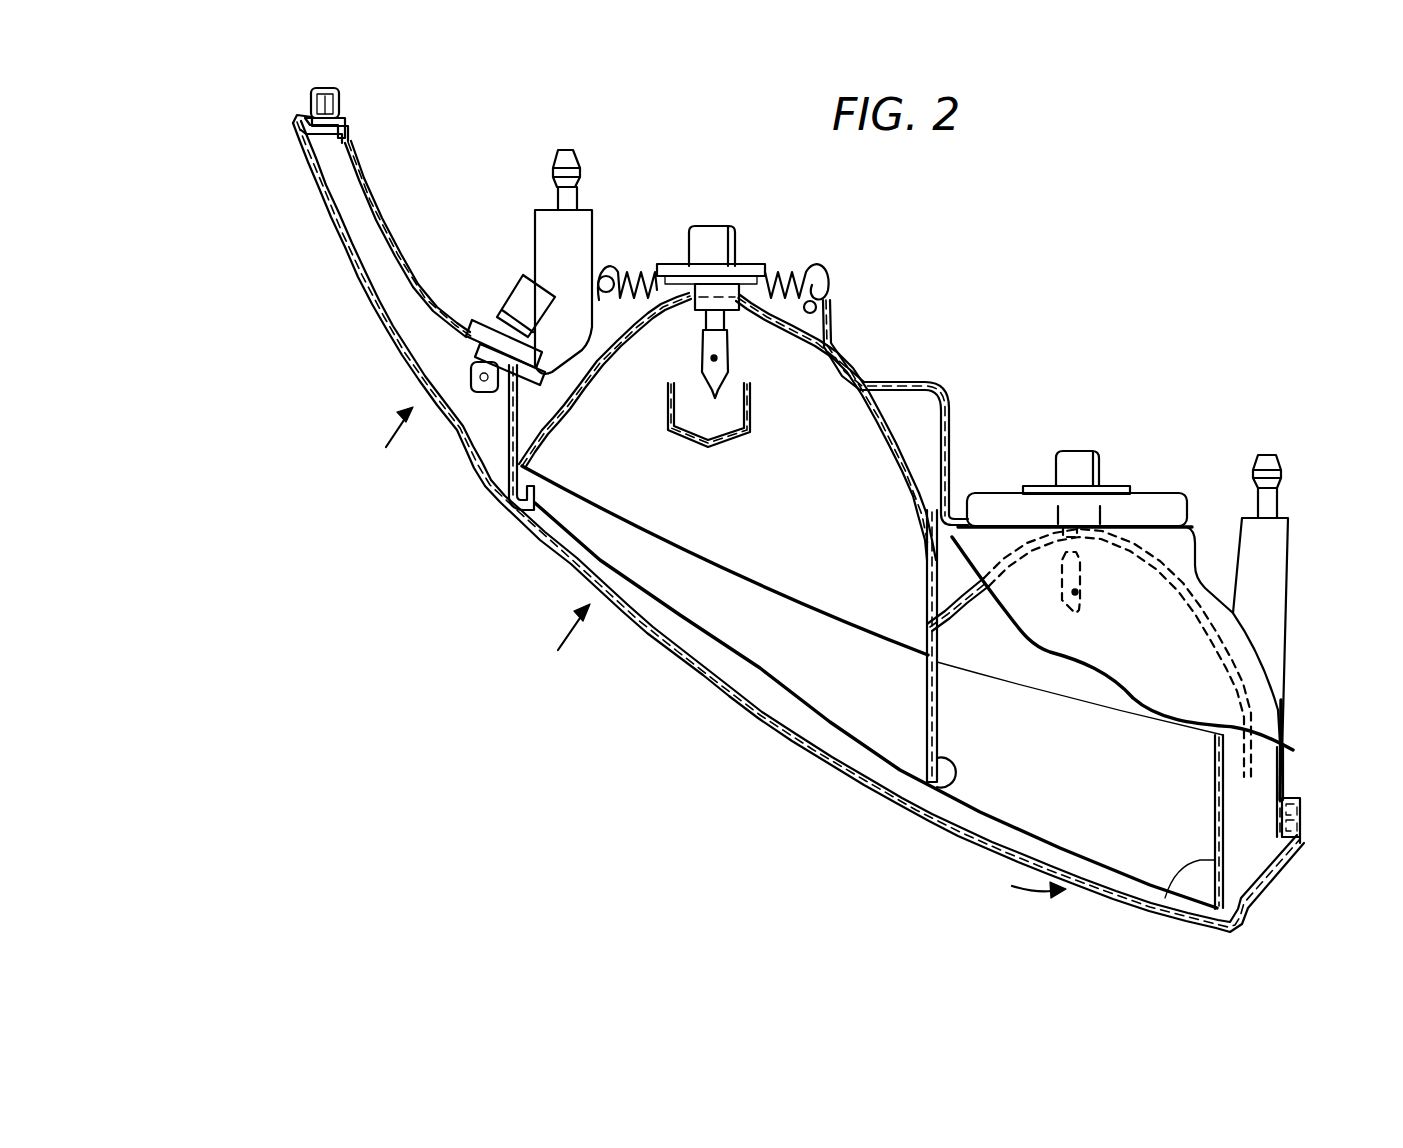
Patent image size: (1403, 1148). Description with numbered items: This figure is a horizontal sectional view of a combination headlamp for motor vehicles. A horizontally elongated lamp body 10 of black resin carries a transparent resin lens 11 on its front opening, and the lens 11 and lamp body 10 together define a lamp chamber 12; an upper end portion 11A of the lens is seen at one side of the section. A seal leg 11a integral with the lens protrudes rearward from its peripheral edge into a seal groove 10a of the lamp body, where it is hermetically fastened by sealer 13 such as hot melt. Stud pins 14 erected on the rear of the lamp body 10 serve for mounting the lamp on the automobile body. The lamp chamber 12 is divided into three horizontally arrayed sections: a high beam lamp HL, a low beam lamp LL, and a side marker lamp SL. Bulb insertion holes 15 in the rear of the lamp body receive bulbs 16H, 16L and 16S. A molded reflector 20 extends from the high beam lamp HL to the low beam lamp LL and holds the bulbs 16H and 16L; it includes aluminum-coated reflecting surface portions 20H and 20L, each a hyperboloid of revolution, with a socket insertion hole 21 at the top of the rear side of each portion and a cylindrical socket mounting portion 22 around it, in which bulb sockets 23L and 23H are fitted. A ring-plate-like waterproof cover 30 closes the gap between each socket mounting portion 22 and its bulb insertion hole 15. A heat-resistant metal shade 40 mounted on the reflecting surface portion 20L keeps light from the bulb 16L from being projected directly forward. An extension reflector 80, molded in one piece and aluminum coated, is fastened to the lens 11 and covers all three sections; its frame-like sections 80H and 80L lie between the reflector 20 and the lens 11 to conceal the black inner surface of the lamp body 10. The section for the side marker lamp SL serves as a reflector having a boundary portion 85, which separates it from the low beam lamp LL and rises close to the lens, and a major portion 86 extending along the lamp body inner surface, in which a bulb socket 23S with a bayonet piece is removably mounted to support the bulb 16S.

The lamp body 10 is at (950, 383).
The seal groove 10a is at (1300, 797).
The lens 11 is at (864, 783).
The lens upper end portion 11A is at (322, 183).
The seal leg 11a is at (1300, 818).
The lamp chamber 12 is at (705, 650).
The sealer 13 is at (1299, 836).
The stud pins 14 is at (575, 164).
The bulb insertion holes 15 is at (478, 323).
The low beam bulb 16L is at (727, 350).
The high beam bulb 16H is at (1078, 614).
The side marker bulb 16S is at (483, 395).
The reflector 20 is at (907, 453).
The low beam reflecting surface portion 20L is at (917, 503).
The high beam reflecting surface portion 20H is at (977, 598).
The socket insertion hole 21 is at (683, 308).
The socket mounting portion 22 is at (740, 290).
The low beam bulb cap 23L is at (712, 240).
The high beam bulb cap 23H is at (1080, 465).
The bulb socket 23S is at (520, 297).
The waterproof cover 30 is at (790, 280).
The shade 40 is at (710, 442).
The extension reflector 80 is at (950, 780).
The low beam frame-like section 80L is at (925, 683).
The high beam frame-like section 80H is at (1170, 895).
The boundary portion 85 is at (512, 440).
The major portion 86 is at (397, 257).
The side marker lamp SL is at (386, 441).
The low beam lamp LL is at (560, 637).
The high beam lamp HL is at (1020, 882).